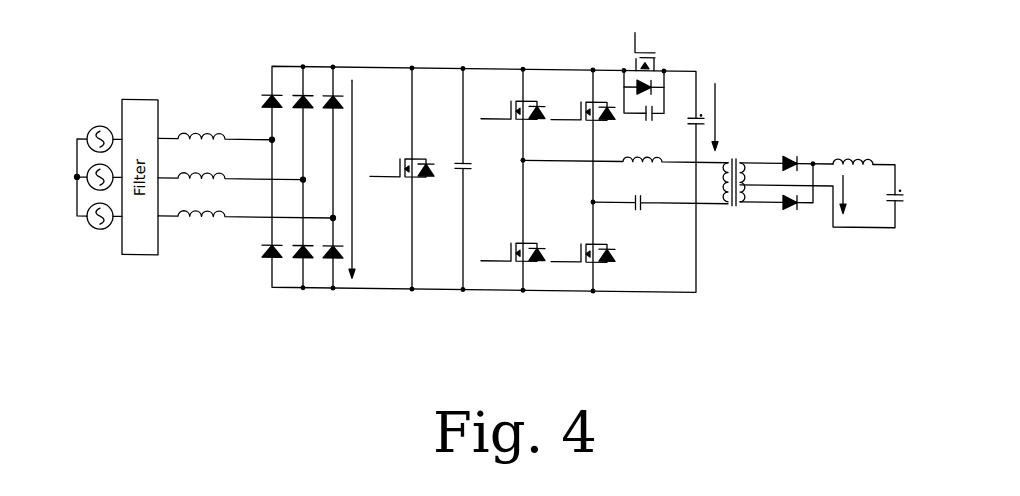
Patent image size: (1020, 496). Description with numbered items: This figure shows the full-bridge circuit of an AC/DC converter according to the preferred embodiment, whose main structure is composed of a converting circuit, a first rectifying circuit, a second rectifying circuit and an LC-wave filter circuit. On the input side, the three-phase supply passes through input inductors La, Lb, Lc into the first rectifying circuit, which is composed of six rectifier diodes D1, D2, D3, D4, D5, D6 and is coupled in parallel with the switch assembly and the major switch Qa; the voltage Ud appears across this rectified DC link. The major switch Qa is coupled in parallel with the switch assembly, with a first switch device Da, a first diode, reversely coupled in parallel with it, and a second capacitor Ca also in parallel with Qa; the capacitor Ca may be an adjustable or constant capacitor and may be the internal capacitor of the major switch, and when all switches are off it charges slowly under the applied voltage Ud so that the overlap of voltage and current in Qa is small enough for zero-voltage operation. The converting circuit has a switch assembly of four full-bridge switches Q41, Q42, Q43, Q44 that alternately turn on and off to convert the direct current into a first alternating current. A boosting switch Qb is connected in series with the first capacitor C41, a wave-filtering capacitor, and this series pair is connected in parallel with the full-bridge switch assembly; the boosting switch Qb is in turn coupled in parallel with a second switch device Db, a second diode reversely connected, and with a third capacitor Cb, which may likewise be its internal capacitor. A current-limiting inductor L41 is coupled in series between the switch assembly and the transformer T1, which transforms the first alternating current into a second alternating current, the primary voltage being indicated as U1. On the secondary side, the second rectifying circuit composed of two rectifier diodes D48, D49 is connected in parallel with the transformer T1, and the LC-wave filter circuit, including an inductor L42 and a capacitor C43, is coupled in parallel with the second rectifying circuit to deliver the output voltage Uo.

The input filter inductor phase A La is at (215, 127).
The input filter inductor phase B Lb is at (230, 168).
The input filter inductor phase C Lc is at (245, 205).
The rectifier diode D1 is at (268, 92).
The rectifier diode D2 is at (298, 92).
The rectifier diode D3 is at (328, 93).
The rectifier diode D4 is at (268, 242).
The rectifier diode D5 is at (298, 242).
The rectifier diode D6 is at (328, 243).
The voltage of the major switch Ud is at (365, 179).
The major switch Qa is at (398, 167).
The first switch device Da is at (434, 159).
The second capacitor Ca is at (473, 155).
The full-bridge switch Q41 is at (513, 110).
The full-bridge switch Q42 is at (583, 111).
The full-bridge switch Q43 is at (583, 253).
The full-bridge switch Q44 is at (513, 252).
The boosting switch Qb is at (650, 52).
The second switch device Db is at (657, 84).
The third capacitor Cb is at (658, 117).
The first capacitor C41 is at (687, 109).
The primary voltage U1 is at (726, 117).
The current-limiting inductor L41 is at (625, 149).
The transformer T1 is at (734, 176).
The rectifier diode D48 is at (796, 153).
The rectifier diode D49 is at (796, 213).
The inductor L42 is at (853, 154).
The output voltage Uo is at (857, 195).
The capacitor C43 is at (907, 188).